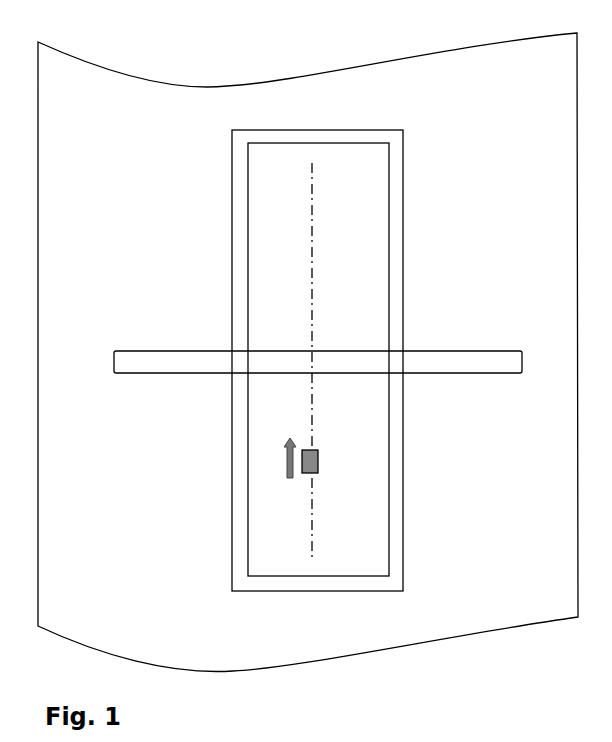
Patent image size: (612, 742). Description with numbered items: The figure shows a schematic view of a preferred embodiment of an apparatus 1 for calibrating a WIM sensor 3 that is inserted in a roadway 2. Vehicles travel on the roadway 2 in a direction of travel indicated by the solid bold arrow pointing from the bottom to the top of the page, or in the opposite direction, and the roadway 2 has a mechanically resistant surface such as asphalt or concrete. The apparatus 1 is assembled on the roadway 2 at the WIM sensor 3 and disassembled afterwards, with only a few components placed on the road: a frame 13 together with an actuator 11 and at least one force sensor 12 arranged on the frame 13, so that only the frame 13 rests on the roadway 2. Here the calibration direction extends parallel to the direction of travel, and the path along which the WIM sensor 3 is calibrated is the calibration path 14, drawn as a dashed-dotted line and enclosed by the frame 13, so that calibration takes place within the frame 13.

The apparatus 1 is at (338, 102).
The roadway 2 is at (158, 591).
The WIM sensor 3 is at (213, 362).
The actuator 11 is at (313, 458).
The force sensor 12 is at (290, 458).
The frame 13 is at (396, 237).
The calibration path 14 is at (312, 232).